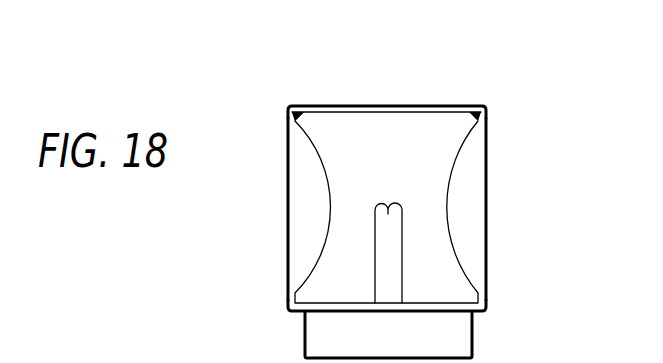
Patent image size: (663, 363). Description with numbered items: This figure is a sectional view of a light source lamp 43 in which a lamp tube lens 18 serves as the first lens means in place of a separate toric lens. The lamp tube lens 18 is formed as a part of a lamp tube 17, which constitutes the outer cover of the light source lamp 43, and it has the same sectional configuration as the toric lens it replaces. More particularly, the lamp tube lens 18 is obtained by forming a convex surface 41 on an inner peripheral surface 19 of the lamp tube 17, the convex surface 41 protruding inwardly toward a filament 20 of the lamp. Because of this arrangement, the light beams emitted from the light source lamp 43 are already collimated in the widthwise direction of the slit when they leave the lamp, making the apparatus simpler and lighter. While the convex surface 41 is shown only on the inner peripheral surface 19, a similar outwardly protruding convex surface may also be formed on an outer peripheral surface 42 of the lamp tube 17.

The lamp tube 17 is at (401, 105).
The lamp tube lens 18 is at (295, 190).
The inner peripheral surface 19 is at (300, 112).
The filament 20 is at (401, 203).
The convex surface 41 is at (332, 192).
The outer peripheral surface 42 is at (288, 117).
The light source lamp 43 is at (504, 94).